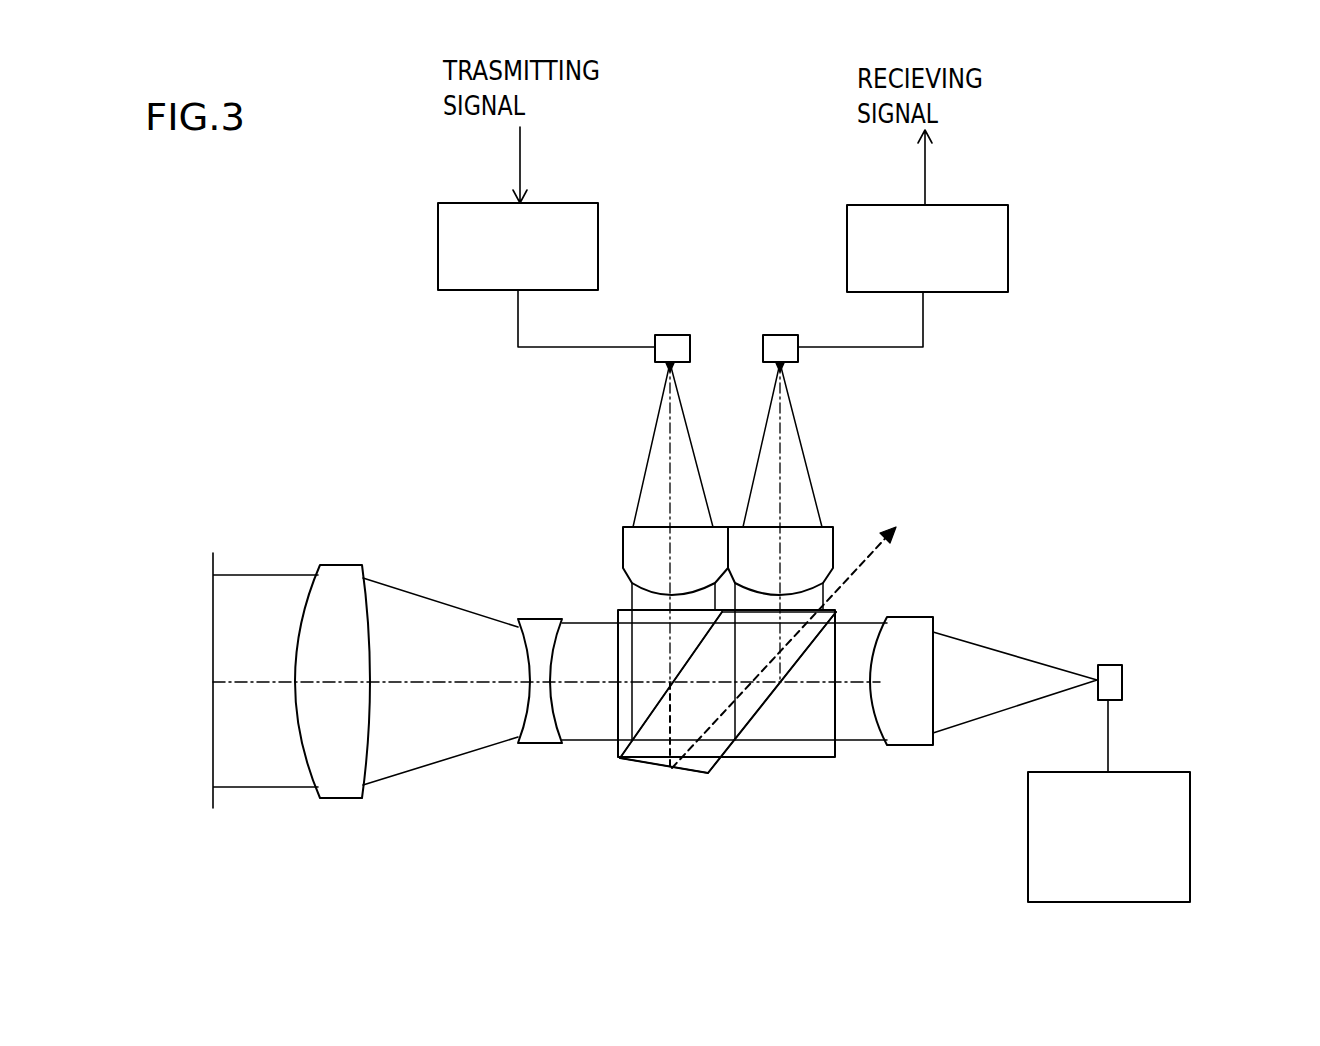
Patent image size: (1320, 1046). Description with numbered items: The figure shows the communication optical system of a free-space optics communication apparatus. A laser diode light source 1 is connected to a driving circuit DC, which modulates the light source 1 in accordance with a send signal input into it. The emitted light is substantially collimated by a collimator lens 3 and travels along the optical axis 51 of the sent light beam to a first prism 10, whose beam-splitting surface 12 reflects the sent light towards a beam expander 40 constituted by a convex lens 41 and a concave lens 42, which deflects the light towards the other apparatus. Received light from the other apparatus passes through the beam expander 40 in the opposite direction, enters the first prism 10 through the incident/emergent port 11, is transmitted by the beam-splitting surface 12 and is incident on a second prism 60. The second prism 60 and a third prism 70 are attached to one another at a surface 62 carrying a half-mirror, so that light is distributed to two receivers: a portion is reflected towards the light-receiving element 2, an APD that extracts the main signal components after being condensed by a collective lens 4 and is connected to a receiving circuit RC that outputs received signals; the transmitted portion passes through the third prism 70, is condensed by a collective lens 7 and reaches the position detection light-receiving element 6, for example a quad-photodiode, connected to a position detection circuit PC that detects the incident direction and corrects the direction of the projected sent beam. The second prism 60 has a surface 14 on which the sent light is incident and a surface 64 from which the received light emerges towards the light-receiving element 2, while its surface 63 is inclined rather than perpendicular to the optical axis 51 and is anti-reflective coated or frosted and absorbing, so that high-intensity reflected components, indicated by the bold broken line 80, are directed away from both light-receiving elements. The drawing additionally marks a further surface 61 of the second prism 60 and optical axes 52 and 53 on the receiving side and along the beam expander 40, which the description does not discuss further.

The laser diode light source 1 is at (655, 347).
The light-receiving element 2 is at (798, 348).
The collimator lens 3 is at (623, 545).
The collective lens 4 is at (834, 545).
The position detection light-receiving element 6 is at (1108, 663).
The collective lens 7 is at (910, 617).
The first prism 10 is at (627, 623).
The incident/emergent port 11 is at (617, 630).
The beam-splitting surface 12 is at (647, 717).
The surface 14 is at (633, 612).
The beam expander 40 is at (428, 737).
The convex lens 41 is at (343, 800).
The concave lens 42 is at (540, 739).
The optical axis 51 is at (670, 435).
The receiving optical axis 52 is at (782, 435).
The main optical axis 53 is at (435, 678).
The second prism 60 is at (834, 620).
The prism first surface 61 is at (653, 710).
The surface 62 is at (778, 750).
The surface 63 is at (693, 777).
The surface 64 is at (753, 610).
The third prism 70 is at (828, 717).
The bold broken line 80 is at (893, 532).
The driving circuit DC is at (583, 205).
The receiving circuit RC is at (956, 208).
The position detection circuit PC is at (1185, 832).